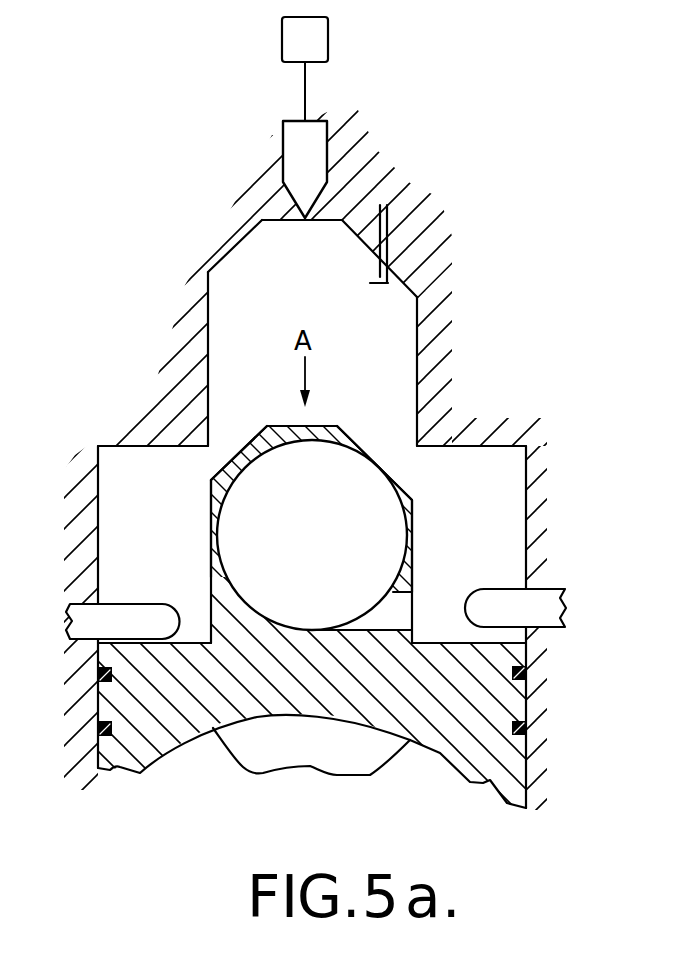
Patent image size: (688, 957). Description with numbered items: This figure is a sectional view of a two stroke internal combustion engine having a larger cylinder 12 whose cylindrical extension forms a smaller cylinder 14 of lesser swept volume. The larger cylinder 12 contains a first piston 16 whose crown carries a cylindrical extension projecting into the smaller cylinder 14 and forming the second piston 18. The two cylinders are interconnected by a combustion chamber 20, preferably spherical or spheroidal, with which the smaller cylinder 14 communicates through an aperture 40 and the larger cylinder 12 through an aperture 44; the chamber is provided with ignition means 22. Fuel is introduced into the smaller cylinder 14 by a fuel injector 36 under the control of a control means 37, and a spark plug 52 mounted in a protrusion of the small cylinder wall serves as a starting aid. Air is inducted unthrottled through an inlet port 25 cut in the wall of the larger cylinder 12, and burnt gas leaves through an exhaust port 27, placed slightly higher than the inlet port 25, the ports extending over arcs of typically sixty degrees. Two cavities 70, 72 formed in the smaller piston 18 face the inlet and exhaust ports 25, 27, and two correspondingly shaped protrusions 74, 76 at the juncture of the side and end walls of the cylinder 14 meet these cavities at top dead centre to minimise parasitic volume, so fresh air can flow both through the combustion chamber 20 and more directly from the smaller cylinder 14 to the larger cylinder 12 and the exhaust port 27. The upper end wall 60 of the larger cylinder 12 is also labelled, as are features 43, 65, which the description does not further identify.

The larger cylinder 12 is at (502, 493).
The smaller cylinder 14 is at (230, 295).
The first piston 16 is at (483, 707).
The second piston 18 is at (217, 489).
The combustion chamber 20 is at (323, 545).
The ignition means 22 is at (240, 480).
The inlet port 25 is at (95, 623).
The exhaust port 27 is at (523, 610).
The fuel injector 36 is at (313, 145).
The control means 37 is at (323, 43).
The aperture 40 is at (388, 466).
The combustion chamber side wall 43 is at (430, 442).
The aperture 44 is at (388, 608).
The spark plug 52 is at (387, 238).
The upper end wall 60 is at (507, 444).
The combustion chamber wall 65 is at (203, 437).
The cavity 70 is at (252, 442).
The cavity 72 is at (360, 442).
The protrusion 74 is at (242, 242).
The protrusion 76 is at (365, 247).